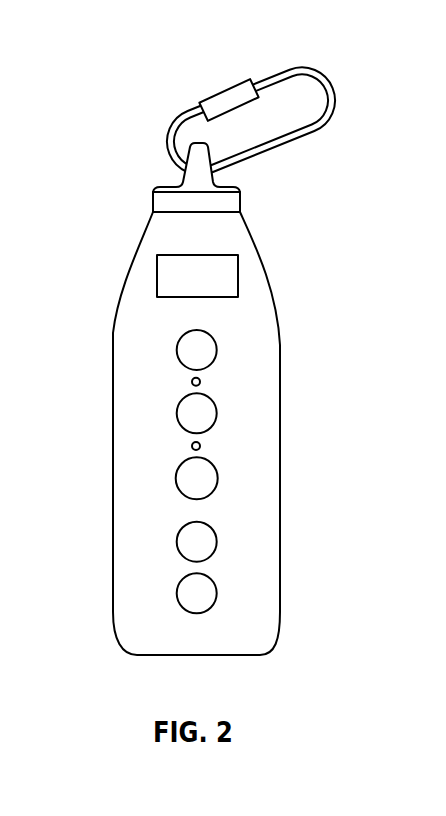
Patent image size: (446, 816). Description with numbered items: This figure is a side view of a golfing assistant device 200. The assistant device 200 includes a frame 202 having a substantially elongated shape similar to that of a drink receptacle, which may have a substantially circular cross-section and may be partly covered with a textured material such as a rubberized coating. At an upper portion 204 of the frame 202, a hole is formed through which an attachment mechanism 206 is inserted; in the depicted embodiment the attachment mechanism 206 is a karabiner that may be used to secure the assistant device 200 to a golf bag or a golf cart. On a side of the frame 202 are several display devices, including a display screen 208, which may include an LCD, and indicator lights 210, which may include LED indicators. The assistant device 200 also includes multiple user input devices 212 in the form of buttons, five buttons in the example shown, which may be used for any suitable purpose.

The golfing assistant device 200 is at (124, 114).
The frame 202 is at (122, 300).
The upper portion 204 is at (195, 170).
The attachment mechanism 206 is at (275, 150).
The display screen 208 is at (238, 272).
The indicator lights 210 is at (191, 382).
The user input devices 212 is at (177, 351).